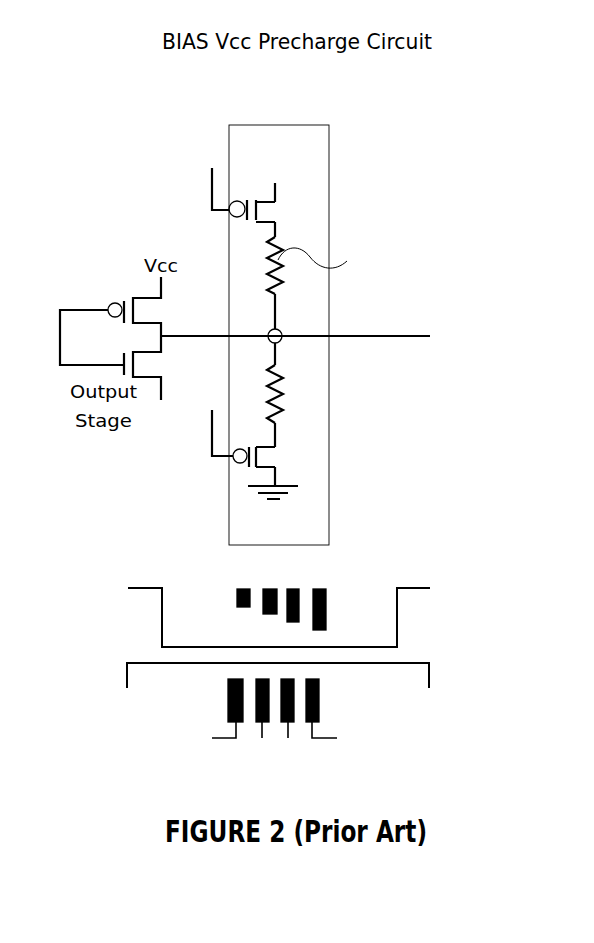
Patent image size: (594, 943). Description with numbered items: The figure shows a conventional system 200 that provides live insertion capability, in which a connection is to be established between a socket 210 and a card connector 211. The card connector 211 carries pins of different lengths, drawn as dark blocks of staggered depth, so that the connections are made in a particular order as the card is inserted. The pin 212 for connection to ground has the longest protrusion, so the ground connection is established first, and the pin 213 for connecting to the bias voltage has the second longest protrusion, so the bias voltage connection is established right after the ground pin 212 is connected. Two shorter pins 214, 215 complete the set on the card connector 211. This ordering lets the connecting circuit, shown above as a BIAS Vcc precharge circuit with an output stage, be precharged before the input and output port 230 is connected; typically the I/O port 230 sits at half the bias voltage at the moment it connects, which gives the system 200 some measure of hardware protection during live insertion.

The conventional system 200 is at (438, 127).
The input and output (I/O) port 230 is at (457, 317).
The card connector 211 is at (430, 588).
The socket 210 is at (429, 690).
The ground pin 212 is at (326, 596).
The bias voltage pin 213 is at (293, 589).
The card pin (BIAS) 214 is at (270, 589).
The card pin (I/O) 215 is at (243, 589).